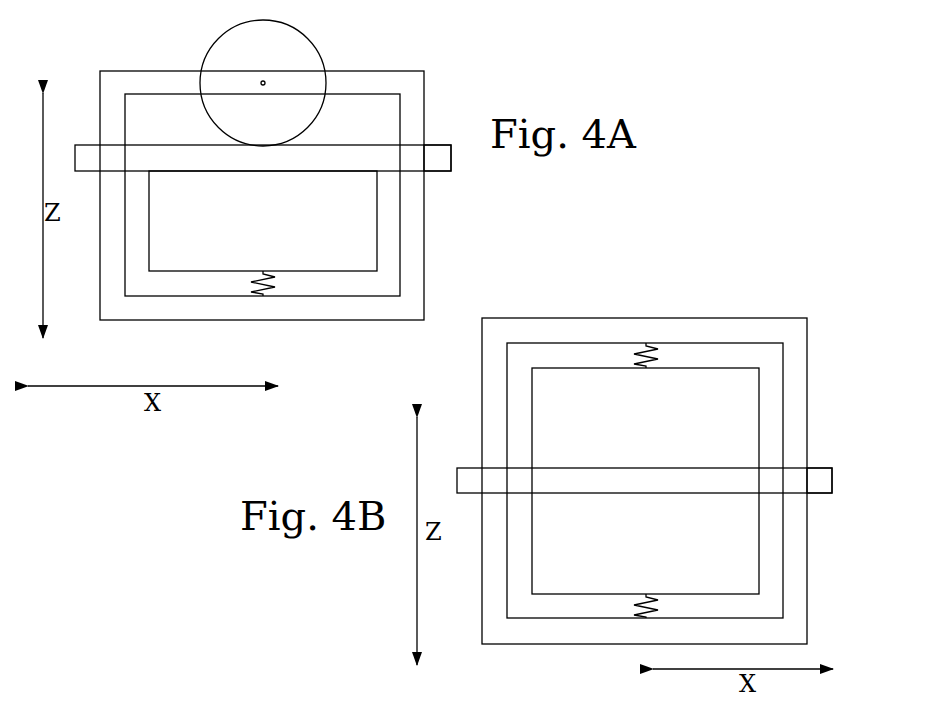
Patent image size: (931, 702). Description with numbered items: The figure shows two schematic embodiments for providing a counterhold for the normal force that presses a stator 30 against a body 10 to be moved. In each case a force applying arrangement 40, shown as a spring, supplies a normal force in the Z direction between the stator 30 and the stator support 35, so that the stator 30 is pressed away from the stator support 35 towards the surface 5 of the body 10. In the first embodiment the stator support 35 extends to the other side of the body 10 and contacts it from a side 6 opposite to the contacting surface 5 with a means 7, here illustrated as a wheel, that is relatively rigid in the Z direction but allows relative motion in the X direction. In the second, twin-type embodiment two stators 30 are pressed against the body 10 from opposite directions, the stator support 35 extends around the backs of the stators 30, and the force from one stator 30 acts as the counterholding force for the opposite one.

In FIG. 4A, the surface 5 is at (446, 174).
In FIG. 4B, the surface 5 is at (469, 467).
In FIG. 4A, the side 6 is at (88, 145).
In FIG. 4A, the means 7 is at (225, 113).
In FIG. 4A, the body 10 is at (437, 152).
In FIG. 4B, the body 10 is at (813, 468).
In FIG. 4A, the stator 30 is at (177, 225).
In FIG. 4B, the stator 30 is at (558, 413).
In FIG. 4A, the stator support 35 is at (120, 306).
In FIG. 4B, the stator support 35 is at (502, 633).
In FIG. 4A, the force applying arrangement 40 is at (263, 296).
In FIG. 4B, the force applying arrangement 40 is at (646, 343).